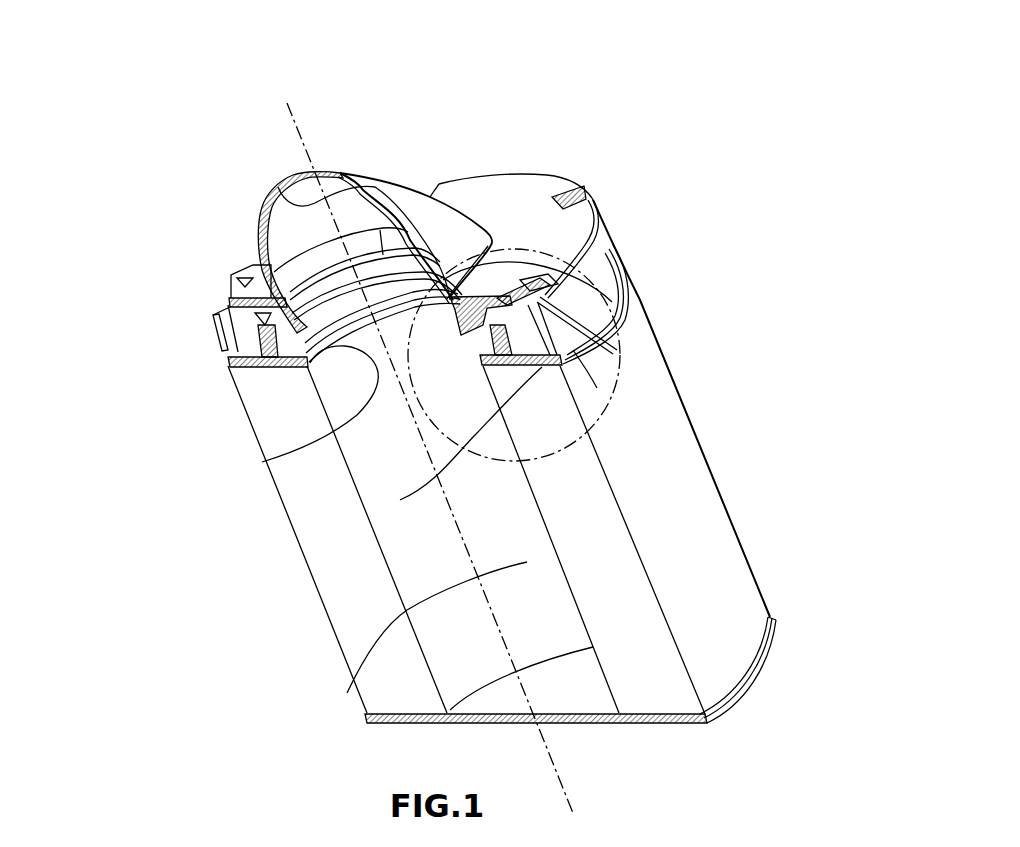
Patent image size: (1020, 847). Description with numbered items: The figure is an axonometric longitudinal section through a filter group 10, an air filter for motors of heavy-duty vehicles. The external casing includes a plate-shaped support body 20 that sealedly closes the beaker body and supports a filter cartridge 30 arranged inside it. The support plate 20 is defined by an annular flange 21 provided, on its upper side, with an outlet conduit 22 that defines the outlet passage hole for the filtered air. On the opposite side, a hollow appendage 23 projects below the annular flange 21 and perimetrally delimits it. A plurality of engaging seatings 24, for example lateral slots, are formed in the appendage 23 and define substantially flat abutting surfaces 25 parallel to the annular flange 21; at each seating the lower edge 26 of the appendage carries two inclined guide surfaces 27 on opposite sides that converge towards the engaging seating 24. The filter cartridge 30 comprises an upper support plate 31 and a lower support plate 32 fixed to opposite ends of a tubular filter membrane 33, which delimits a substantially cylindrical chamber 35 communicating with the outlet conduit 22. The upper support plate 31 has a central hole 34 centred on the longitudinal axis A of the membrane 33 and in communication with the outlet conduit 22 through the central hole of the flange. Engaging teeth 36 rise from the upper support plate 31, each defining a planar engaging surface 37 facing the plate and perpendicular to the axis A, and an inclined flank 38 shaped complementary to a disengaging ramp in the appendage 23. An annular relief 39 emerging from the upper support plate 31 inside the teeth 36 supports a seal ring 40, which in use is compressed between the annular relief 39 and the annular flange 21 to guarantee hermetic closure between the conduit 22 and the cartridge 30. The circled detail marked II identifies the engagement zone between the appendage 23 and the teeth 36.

The filter group 10 is at (152, 137).
The plate-shaped support body 20 is at (467, 149).
The annular flange 21 is at (528, 224).
The outlet conduit 22 is at (277, 187).
The hollow appendage 23 is at (628, 280).
The engaging seating 24 is at (590, 195).
The abutting surface 25 is at (600, 337).
The lower edge 26 is at (622, 260).
The guide surface 27 is at (626, 326).
The filter cartridge 30 is at (263, 641).
The upper support plate 31 is at (285, 368).
The lower support plate 32 is at (633, 723).
The tubular filter membrane 33 is at (600, 540).
The central hole 34 is at (262, 462).
The chamber 35 is at (347, 693).
The engaging tooth 36 is at (597, 388).
The engaging surface 37 is at (218, 332).
The inclined flank 38 is at (218, 322).
The annular relief 39 is at (400, 500).
The seal ring 40 is at (233, 275).
The longitudinal axis A is at (560, 783).
The detail section II is at (620, 379).